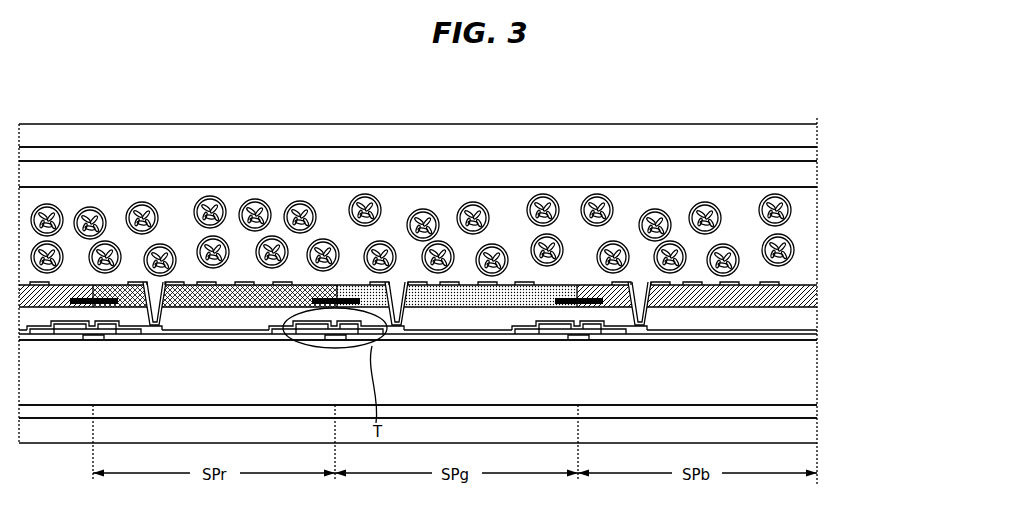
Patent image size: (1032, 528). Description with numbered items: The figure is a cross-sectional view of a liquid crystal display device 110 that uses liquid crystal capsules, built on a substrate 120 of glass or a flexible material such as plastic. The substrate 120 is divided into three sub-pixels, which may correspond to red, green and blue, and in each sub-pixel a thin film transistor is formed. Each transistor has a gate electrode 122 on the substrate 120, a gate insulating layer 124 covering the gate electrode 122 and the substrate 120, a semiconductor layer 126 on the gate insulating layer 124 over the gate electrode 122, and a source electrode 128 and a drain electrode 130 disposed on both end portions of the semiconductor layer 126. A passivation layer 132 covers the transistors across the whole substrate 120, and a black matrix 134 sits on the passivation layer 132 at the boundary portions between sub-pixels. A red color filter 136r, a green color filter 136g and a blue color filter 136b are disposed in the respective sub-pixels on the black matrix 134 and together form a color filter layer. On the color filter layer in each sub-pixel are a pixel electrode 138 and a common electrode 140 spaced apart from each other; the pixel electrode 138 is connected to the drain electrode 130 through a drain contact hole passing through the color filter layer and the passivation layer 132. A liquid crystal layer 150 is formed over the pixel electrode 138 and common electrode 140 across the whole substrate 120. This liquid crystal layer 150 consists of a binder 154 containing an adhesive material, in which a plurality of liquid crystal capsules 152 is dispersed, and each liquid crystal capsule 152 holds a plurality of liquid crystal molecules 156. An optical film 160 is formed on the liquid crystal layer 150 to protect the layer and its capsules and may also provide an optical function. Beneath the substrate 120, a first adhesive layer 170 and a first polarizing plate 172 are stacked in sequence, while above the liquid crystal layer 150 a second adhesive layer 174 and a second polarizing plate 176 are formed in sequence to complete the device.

The liquid crystal display device 110 is at (438, 78).
The substrate 120 is at (790, 381).
The gate electrode 122 is at (342, 341).
The gate insulating layer 124 is at (429, 339).
The semiconductor layer 126 is at (305, 332).
The source electrode 128 is at (290, 327).
The drain electrode 130 is at (398, 337).
The passivation layer 132 is at (465, 329).
The black matrix 134 is at (105, 307).
The red color filter 136r is at (237, 298).
The green color filter 136g is at (493, 298).
The blue color filter 136b is at (678, 292).
The pixel electrode 138 is at (181, 307).
The common electrode 140 is at (219, 296).
The liquid crystal layer 150 is at (478, 236).
The liquid crystal capsule 152 is at (793, 247).
The binder 154 is at (807, 210).
The liquid crystal molecules 156 is at (795, 254).
The optical film 160 is at (807, 180).
The first adhesive layer 170 is at (807, 413).
The first polarizing plate 172 is at (807, 433).
The second adhesive layer 174 is at (807, 157).
The second polarizing plate 176 is at (807, 132).